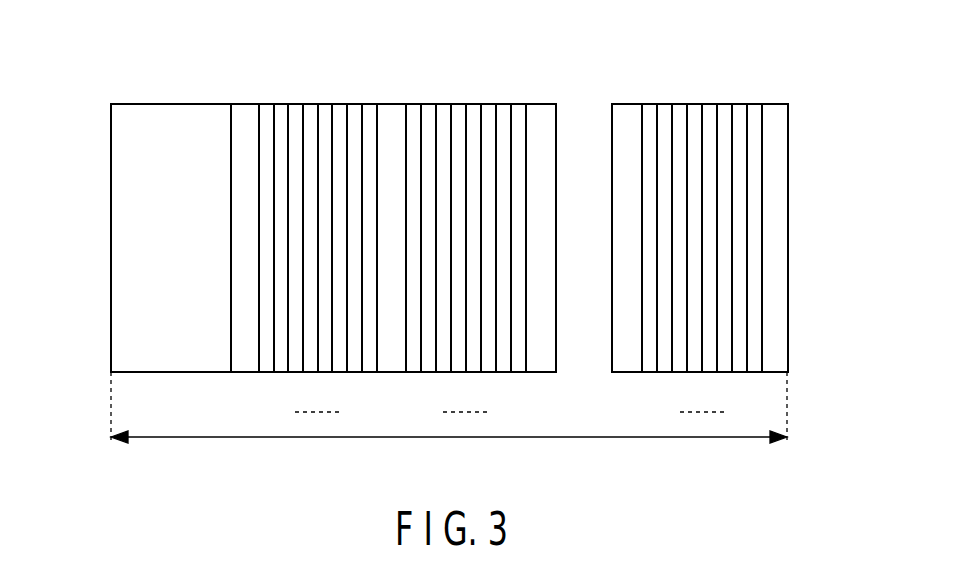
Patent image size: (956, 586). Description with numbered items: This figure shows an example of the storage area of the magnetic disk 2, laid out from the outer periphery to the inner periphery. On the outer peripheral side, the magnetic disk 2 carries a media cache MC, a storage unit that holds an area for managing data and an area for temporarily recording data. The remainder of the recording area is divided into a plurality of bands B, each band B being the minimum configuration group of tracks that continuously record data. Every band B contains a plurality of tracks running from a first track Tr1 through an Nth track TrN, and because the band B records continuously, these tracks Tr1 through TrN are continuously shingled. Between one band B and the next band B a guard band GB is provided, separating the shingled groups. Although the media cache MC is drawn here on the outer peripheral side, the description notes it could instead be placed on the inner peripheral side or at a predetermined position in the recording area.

The magnetic disk 2 is at (142, 72).
The media cache MC is at (178, 104).
The guard band GB is at (245, 118).
The band B is at (377, 104).
The track Tr1 is at (270, 357).
The track TrN is at (371, 357).